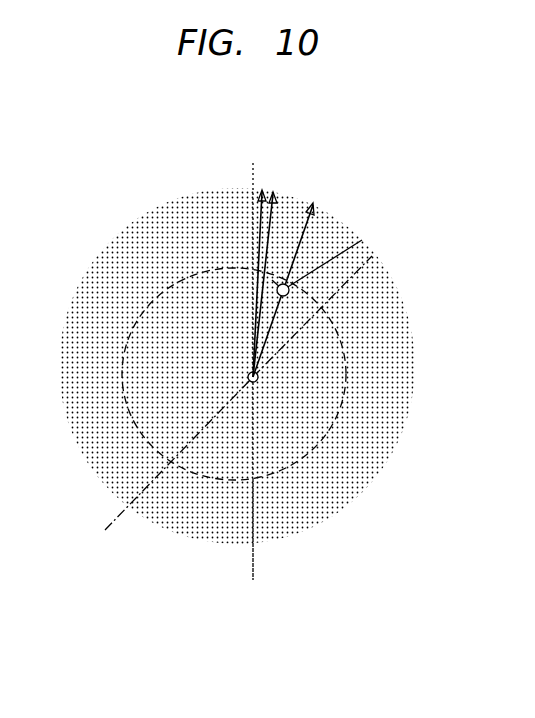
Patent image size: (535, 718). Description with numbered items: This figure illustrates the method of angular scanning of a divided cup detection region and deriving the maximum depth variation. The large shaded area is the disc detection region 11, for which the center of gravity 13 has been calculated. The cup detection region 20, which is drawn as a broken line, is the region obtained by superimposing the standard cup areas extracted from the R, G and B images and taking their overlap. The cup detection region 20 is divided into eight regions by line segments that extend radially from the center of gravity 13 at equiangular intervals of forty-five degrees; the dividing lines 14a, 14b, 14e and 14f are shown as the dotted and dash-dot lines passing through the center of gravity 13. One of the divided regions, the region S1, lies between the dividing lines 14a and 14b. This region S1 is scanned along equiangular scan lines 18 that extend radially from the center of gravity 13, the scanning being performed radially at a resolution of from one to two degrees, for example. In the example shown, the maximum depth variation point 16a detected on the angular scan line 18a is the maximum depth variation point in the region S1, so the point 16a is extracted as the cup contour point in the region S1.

The disc detection region 11 is at (410, 340).
The cup detection region 20 is at (332, 372).
The center of gravity 13 is at (256, 379).
The dividing line 14a is at (252, 172).
The dividing line 14b is at (370, 258).
The dividing line 14e is at (255, 550).
The dividing line 14f is at (122, 512).
The maximum depth variation point 16a is at (390, 238).
The scan lines 18 is at (278, 188).
The angular scan line 18a is at (313, 205).
The divided region S1 is at (306, 289).